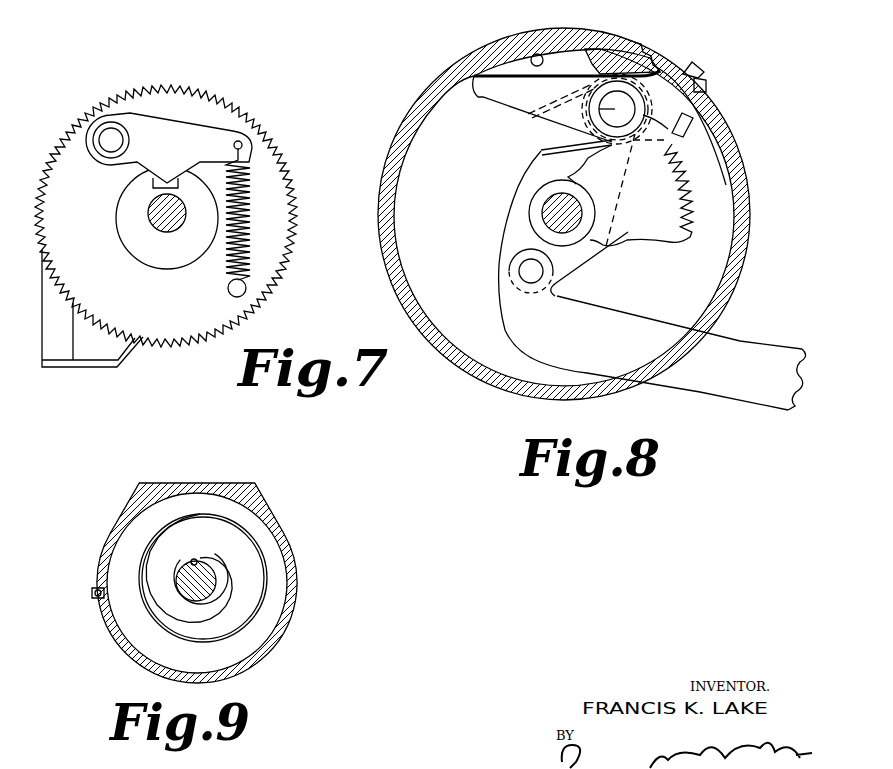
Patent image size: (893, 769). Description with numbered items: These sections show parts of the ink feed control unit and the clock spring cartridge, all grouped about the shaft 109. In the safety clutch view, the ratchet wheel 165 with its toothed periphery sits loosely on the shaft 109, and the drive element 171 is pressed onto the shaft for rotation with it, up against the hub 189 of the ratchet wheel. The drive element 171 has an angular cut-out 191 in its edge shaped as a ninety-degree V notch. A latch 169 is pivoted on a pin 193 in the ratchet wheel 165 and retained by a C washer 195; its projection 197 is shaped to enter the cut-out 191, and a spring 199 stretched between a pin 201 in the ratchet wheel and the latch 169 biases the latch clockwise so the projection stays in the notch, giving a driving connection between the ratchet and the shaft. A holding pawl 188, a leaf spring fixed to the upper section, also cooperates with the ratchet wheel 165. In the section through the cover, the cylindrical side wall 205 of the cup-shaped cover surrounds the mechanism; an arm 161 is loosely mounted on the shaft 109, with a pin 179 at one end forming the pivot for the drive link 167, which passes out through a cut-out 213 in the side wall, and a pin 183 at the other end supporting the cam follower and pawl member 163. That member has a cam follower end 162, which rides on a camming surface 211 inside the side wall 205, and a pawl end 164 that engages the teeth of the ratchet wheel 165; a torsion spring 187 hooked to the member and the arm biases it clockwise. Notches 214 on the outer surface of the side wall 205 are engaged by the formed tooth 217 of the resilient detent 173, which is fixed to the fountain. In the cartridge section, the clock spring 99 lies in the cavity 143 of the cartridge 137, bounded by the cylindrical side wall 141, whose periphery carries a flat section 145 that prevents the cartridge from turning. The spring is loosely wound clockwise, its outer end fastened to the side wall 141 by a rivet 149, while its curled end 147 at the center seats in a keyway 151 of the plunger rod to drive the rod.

In FIG. 9, the clock spring 99 is at (260, 544).
In FIG. 7, the shaft 109 is at (148, 217).
In FIG. 8, the shaft 109 is at (542, 215).
In FIG. 9, the shaft 109 is at (198, 596).
In FIG. 9, the cartridge 137 is at (297, 572).
In FIG. 9, the side wall 141 is at (292, 630).
In FIG. 9, the cavity 143 is at (128, 538).
In FIG. 9, the flat section 145 is at (202, 482).
In FIG. 9, the curled end 147 is at (190, 562).
In FIG. 9, the rivet 149 is at (92, 594).
In FIG. 9, the keyway 151 is at (224, 572).
In FIG. 8, the arm 161 is at (522, 180).
In FIG. 8, the cam follower end 162 is at (478, 100).
In FIG. 8, the cam follower and pawl member 163 is at (580, 82).
In FIG. 8, the pawl end 164 is at (700, 134).
In FIG. 7, the ratchet wheel 165 is at (274, 146).
In FIG. 8, the ratchet wheel 165 is at (646, 204).
In FIG. 8, the drive link 167 is at (741, 343).
In FIG. 7, the latch 169 is at (212, 130).
In FIG. 7, the drive element 171 is at (117, 216).
In FIG. 8, the detent 173 is at (704, 80).
In FIG. 8, the pin 179 is at (520, 272).
In FIG. 8, the pin 183 is at (550, 150).
In FIG. 8, the torsion spring 187 is at (528, 117).
In FIG. 7, the holding pawl 188 is at (126, 352).
In FIG. 8, the hub 189 is at (528, 196).
In FIG. 7, the cut-out 191 is at (152, 184).
In FIG. 7, the pin 193 is at (100, 141).
In FIG. 7, the C washer 195 is at (128, 118).
In FIG. 7, the projection 197 is at (165, 173).
In FIG. 7, the spring 199 is at (252, 214).
In FIG. 7, the pin 201 is at (246, 293).
In FIG. 8, the side wall 205 is at (750, 212).
In FIG. 8, the camming surface 211 is at (536, 52).
In FIG. 8, the cut-out 213 is at (748, 256).
In FIG. 8, the notches 214 is at (650, 55).
In FIG. 8, the tooth 217 is at (692, 70).